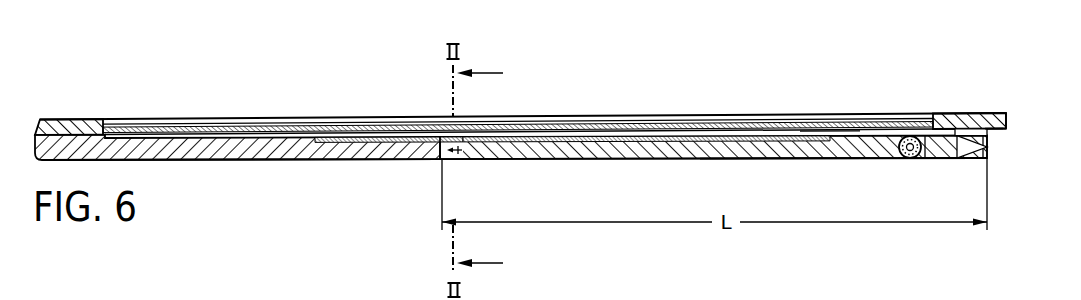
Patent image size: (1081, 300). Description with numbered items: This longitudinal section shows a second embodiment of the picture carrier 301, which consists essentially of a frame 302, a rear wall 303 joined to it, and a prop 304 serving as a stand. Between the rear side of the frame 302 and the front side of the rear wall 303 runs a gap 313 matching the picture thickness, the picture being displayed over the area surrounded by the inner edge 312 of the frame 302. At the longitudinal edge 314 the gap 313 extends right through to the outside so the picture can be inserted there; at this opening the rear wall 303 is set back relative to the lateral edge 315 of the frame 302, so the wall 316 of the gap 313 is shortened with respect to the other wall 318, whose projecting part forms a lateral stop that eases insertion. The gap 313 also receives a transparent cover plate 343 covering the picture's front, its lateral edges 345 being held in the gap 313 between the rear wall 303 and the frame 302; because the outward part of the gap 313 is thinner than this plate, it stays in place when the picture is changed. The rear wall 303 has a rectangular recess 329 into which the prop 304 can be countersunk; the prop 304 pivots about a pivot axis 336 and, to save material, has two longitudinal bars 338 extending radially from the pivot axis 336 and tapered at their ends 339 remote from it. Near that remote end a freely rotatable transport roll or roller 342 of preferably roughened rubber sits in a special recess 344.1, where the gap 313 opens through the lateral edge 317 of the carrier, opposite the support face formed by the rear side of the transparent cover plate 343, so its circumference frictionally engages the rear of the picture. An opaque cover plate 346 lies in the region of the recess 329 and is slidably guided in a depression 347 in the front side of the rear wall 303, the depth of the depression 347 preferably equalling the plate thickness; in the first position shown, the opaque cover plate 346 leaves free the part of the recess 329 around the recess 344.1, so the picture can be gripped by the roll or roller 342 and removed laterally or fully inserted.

The picture carrier 301 is at (375, 173).
The frame 302 is at (60, 110).
The rear wall 303 is at (233, 166).
The prop 304 is at (571, 171).
The inner edge 312 is at (113, 128).
The gap 313 is at (827, 133).
The longitudinal edge 314 is at (996, 152).
The lateral edge 315 is at (1006, 122).
The wall 316 is at (967, 130).
The lateral edge 317 is at (1006, 147).
The wall 318 is at (1012, 130).
The recess 329 is at (441, 150).
The pivot axis 336 is at (456, 159).
The longitudinal bars 338 is at (783, 151).
The ends 339 is at (953, 159).
The transport roll or roller 342 is at (911, 158).
The transparent cover plate 343 is at (879, 122).
The recess 344.1 is at (928, 159).
The lateral edges 345 is at (107, 131).
The opaque cover plate 346 is at (690, 142).
The depression 347 is at (349, 140).